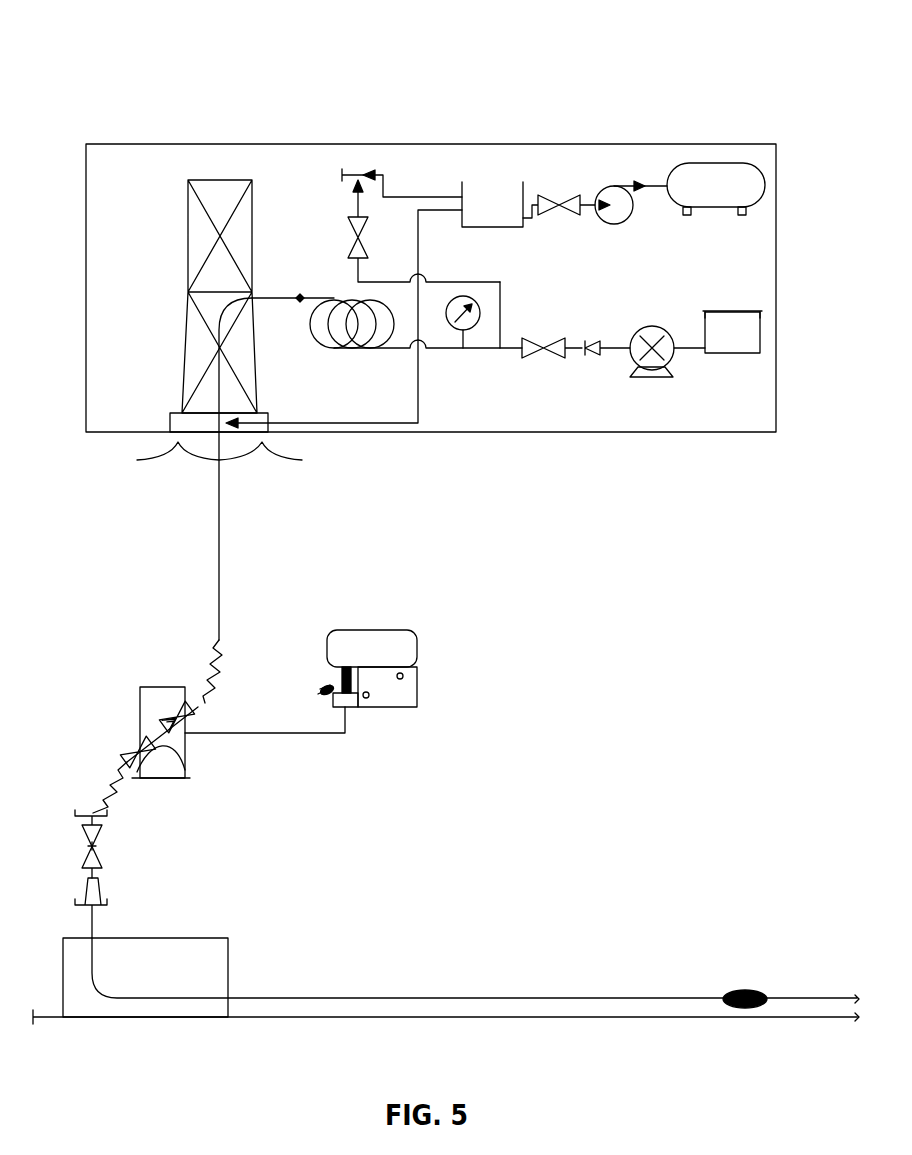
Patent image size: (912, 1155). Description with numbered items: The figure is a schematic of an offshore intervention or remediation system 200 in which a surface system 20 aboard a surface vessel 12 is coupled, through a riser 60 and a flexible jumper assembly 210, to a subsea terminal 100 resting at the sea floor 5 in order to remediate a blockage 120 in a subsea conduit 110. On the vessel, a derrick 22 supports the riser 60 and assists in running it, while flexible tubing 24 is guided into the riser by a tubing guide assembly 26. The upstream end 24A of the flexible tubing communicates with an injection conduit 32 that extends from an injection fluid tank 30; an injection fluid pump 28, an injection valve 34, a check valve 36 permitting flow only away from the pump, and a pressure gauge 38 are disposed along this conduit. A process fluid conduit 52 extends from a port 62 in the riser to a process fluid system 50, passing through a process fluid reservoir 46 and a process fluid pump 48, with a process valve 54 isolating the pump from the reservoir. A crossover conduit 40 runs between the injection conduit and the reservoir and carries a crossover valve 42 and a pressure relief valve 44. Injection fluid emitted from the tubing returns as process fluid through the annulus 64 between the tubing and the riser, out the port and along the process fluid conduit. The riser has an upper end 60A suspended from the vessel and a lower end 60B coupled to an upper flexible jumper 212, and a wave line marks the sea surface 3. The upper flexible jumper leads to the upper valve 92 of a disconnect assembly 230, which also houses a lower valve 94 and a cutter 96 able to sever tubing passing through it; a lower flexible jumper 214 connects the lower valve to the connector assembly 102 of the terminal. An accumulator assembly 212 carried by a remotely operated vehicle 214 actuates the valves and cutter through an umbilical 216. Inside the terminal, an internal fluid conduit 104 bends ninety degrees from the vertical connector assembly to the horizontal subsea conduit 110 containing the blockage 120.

The offshore intervention or remediation system 200 is at (115, 40).
The surface system 20 is at (426, 118).
The surface vessel 12 is at (723, 433).
The derrick 22 is at (205, 180).
The flexible tubing 24 is at (285, 300).
The upstream end 24A is at (300, 294).
The tubing guide assembly 26 is at (325, 348).
The crossover valve 42 is at (352, 218).
The pressure relief valve 44 is at (373, 174).
The process fluid reservoir 46 is at (492, 195).
The process fluid conduit 52 is at (422, 258).
The crossover conduit 40 is at (476, 282).
The pressure gauge 38 is at (467, 330).
The process valve 54 is at (548, 210).
The process fluid pump 48 is at (618, 215).
The process fluid system 50 is at (722, 208).
The injection valve 34 is at (532, 355).
The check valve 36 is at (595, 355).
The injection fluid pump 28 is at (655, 372).
The injection conduit 32 is at (680, 346).
The injection fluid tank 30 is at (728, 350).
The sea surface 3 is at (303, 460).
The riser 60 is at (219, 535).
The upper end 60A is at (232, 420).
The port 62 is at (224, 425).
The annulus 64 is at (219, 585).
The lower end 60B is at (222, 640).
The flexible jumper assembly 210 is at (104, 753).
The disconnect assembly 230 is at (160, 688).
The lower valve 94 is at (134, 752).
The upper valve 92 is at (190, 712).
The cutter 96 is at (188, 780).
The upper flexible jumper 212 is at (212, 668).
The lower flexible jumper 214 is at (112, 778).
The umbilical 216 is at (280, 735).
The connector assembly 102 is at (100, 890).
The subsea terminal 100 is at (190, 940).
The internal fluid conduit 104 is at (157, 1000).
The subsea conduit 110 is at (553, 998).
The blockage 120 is at (755, 990).
The sea floor 5 is at (52, 1012).